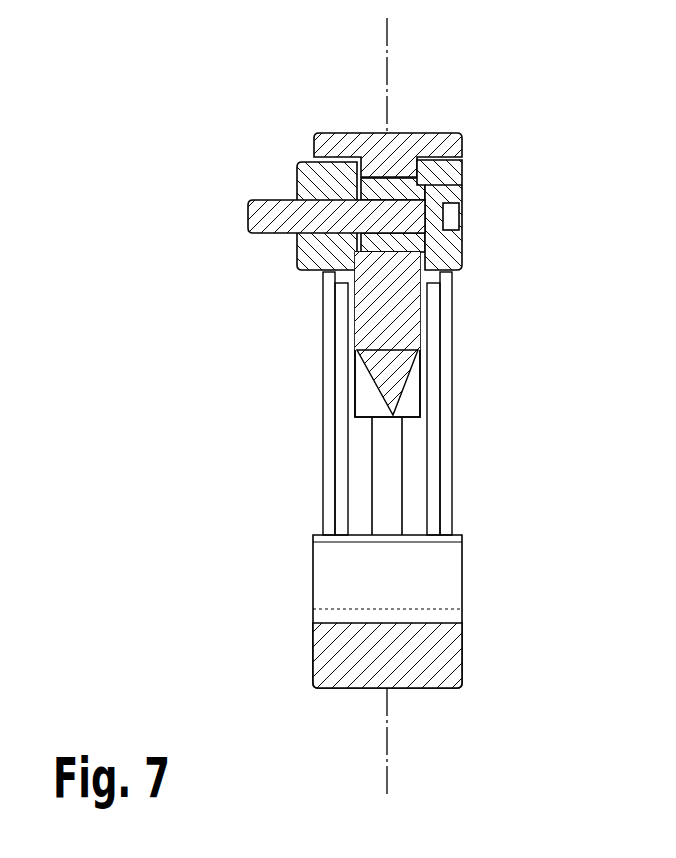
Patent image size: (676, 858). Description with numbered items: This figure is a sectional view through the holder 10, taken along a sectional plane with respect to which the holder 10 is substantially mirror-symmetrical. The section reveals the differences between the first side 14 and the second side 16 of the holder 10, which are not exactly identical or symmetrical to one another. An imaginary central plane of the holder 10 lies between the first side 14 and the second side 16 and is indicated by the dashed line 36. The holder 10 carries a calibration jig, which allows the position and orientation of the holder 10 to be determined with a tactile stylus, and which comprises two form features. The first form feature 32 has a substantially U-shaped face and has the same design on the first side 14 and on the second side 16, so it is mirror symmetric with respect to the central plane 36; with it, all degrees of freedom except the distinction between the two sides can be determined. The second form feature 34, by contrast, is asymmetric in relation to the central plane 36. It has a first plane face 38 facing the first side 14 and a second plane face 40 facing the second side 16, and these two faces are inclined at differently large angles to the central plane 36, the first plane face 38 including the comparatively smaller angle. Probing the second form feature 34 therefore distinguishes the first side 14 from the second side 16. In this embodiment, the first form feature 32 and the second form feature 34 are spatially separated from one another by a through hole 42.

The holder 10 is at (541, 124).
The first side 14 is at (462, 653).
The second side 16 is at (313, 653).
The first form feature 32 is at (402, 623).
The second form feature 34 is at (392, 372).
The central plane 36 is at (387, 742).
The first plane face 38 is at (401, 400).
The second plane face 40 is at (384, 400).
The through hole 42 is at (390, 485).